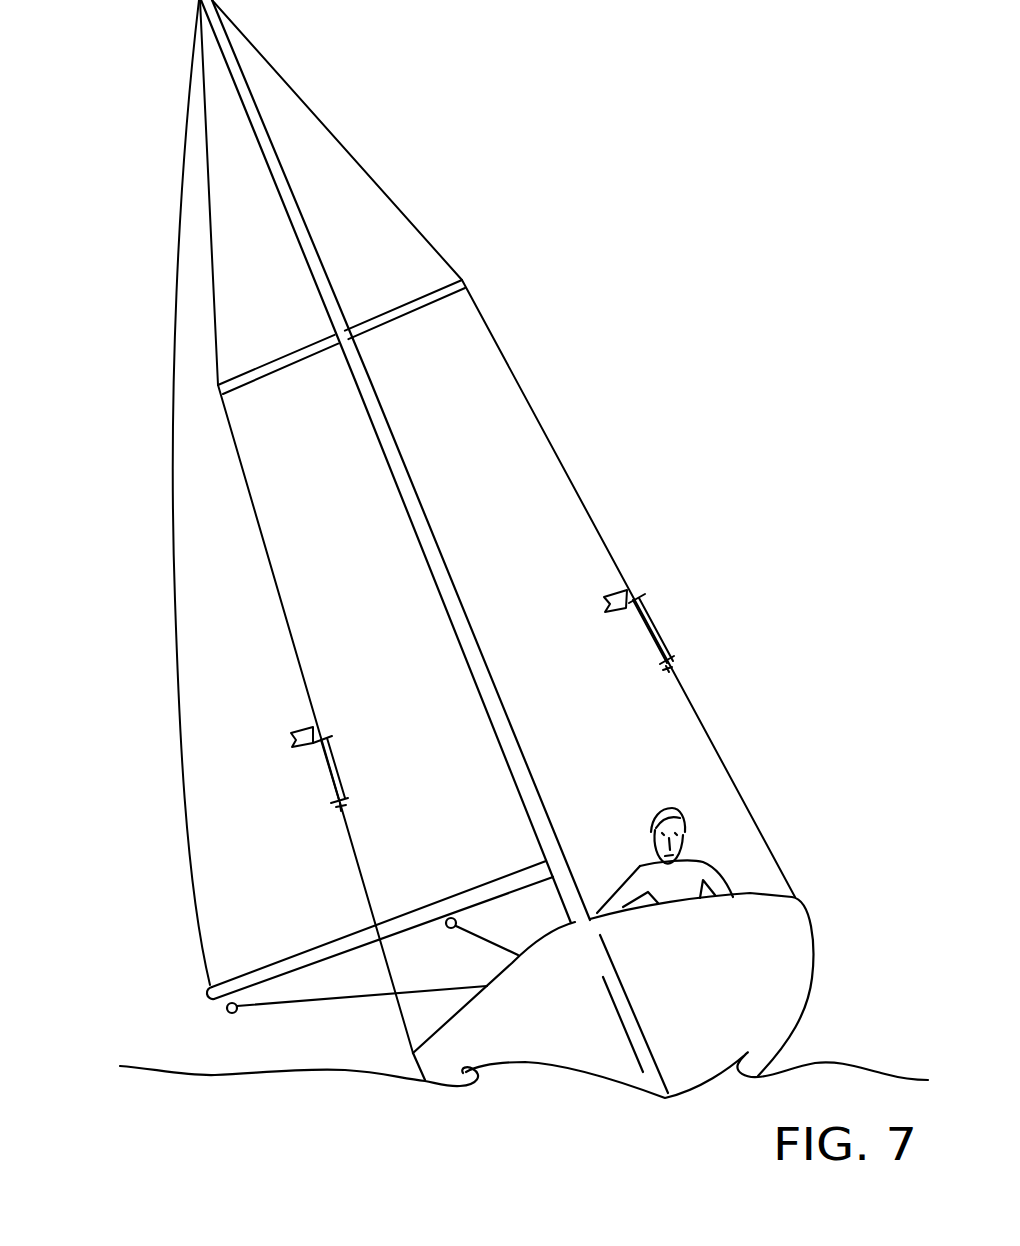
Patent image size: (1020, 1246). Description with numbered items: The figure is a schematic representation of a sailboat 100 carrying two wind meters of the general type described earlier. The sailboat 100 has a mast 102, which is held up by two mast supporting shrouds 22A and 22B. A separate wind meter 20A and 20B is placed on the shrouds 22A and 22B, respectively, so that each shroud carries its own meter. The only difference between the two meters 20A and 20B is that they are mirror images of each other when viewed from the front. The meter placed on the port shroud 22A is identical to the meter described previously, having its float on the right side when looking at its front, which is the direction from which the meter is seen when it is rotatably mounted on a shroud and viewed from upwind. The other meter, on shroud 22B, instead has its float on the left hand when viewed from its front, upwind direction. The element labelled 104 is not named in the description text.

The sailboat 100 is at (624, 400).
The mast 102 is at (424, 506).
The jib sail 104 is at (171, 483).
The mast supporting shroud 22A is at (593, 515).
The mast supporting shroud 22B is at (288, 629).
The wind meter 20A is at (657, 631).
The wind meter 20B is at (319, 778).